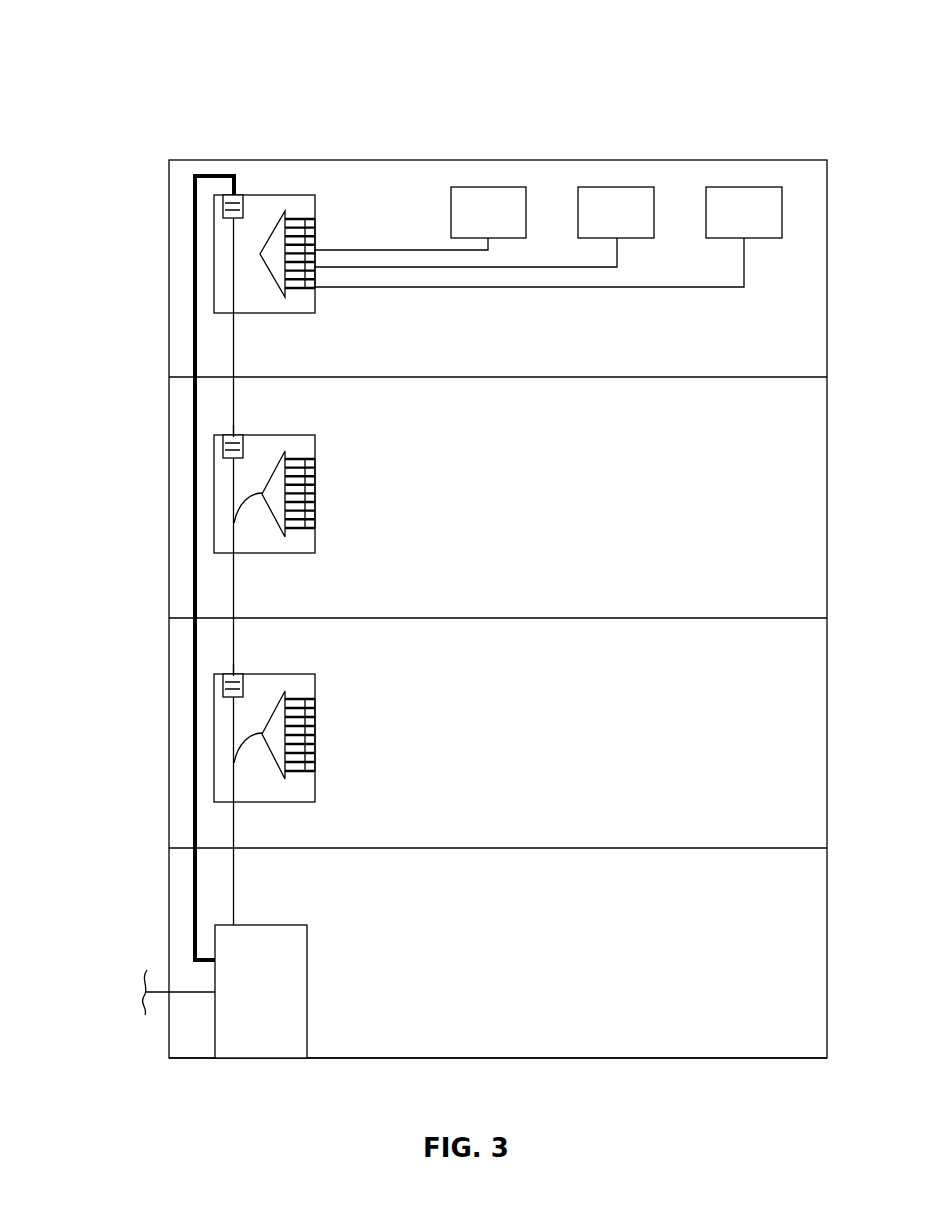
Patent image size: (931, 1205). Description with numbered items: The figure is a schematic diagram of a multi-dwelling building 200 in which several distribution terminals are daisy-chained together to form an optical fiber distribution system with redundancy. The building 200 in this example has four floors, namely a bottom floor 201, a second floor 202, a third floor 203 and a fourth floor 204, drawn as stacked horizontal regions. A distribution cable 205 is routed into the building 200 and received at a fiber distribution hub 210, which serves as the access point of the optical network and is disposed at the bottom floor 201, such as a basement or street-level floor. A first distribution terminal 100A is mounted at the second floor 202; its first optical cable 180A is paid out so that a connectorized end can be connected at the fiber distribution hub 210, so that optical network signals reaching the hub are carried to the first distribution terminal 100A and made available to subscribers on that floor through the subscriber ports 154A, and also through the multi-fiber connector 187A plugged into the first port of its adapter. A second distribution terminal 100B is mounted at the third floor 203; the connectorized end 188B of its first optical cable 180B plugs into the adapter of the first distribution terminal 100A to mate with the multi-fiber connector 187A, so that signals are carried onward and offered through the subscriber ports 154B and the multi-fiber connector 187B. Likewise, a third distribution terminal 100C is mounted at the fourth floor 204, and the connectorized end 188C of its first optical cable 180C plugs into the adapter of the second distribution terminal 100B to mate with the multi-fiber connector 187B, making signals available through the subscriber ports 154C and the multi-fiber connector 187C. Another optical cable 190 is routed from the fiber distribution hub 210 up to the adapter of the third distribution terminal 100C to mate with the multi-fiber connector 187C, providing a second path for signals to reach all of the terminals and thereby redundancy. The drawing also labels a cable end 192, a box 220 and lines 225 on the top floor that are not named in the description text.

The multi-dwelling building 200 is at (133, 47).
The first distribution terminal 100A is at (268, 802).
The second distribution terminal 100B is at (280, 435).
The third distribution terminal 100C is at (263, 195).
The subscriber ports 154A is at (330, 698).
The subscriber ports 154B is at (330, 455).
The subscriber ports 154C is at (317, 222).
The first optical cable 180A is at (237, 893).
The first optical cable 180B is at (237, 598).
The first optical cable 180C is at (235, 360).
The multi-fiber connector 187A is at (223, 690).
The multi-fiber connector 187B is at (223, 450).
The multi-fiber connector 187C is at (223, 208).
The connectorized end 188B is at (223, 680).
The connectorized end 188C is at (223, 440).
The optical cable 190 is at (192, 330).
The cable end 192 is at (223, 200).
The bottom floor 201 is at (688, 952).
The second floor 202 is at (683, 746).
The third floor 203 is at (687, 506).
The fourth floor 204 is at (691, 350).
The distribution cable 205 is at (183, 994).
The fiber distribution hub 210 is at (240, 1006).
The remote device 220 is at (466, 226).
The device cables 225 is at (370, 247).